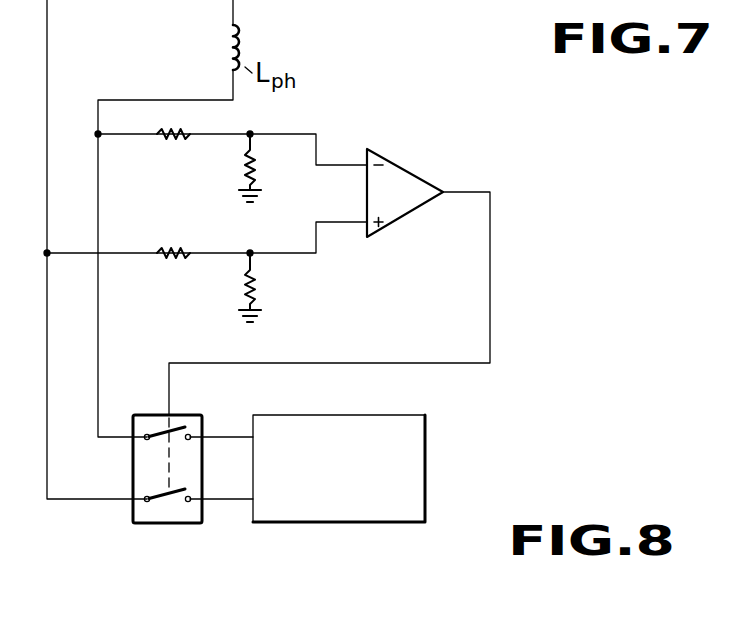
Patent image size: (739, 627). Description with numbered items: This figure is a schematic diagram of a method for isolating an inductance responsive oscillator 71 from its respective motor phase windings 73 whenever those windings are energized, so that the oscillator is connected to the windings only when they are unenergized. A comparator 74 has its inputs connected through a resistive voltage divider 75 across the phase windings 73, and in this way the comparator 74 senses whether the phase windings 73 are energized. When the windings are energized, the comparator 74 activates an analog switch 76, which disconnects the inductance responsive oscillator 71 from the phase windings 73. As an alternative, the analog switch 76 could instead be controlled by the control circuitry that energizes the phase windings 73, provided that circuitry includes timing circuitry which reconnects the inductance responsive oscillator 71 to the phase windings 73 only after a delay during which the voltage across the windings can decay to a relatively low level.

The inductance responsive oscillator 71 is at (425, 439).
The phase windings 73 is at (230, 38).
The comparator 74 is at (409, 171).
The resistive voltage divider 75 is at (214, 156).
The analog switch 76 is at (153, 523).